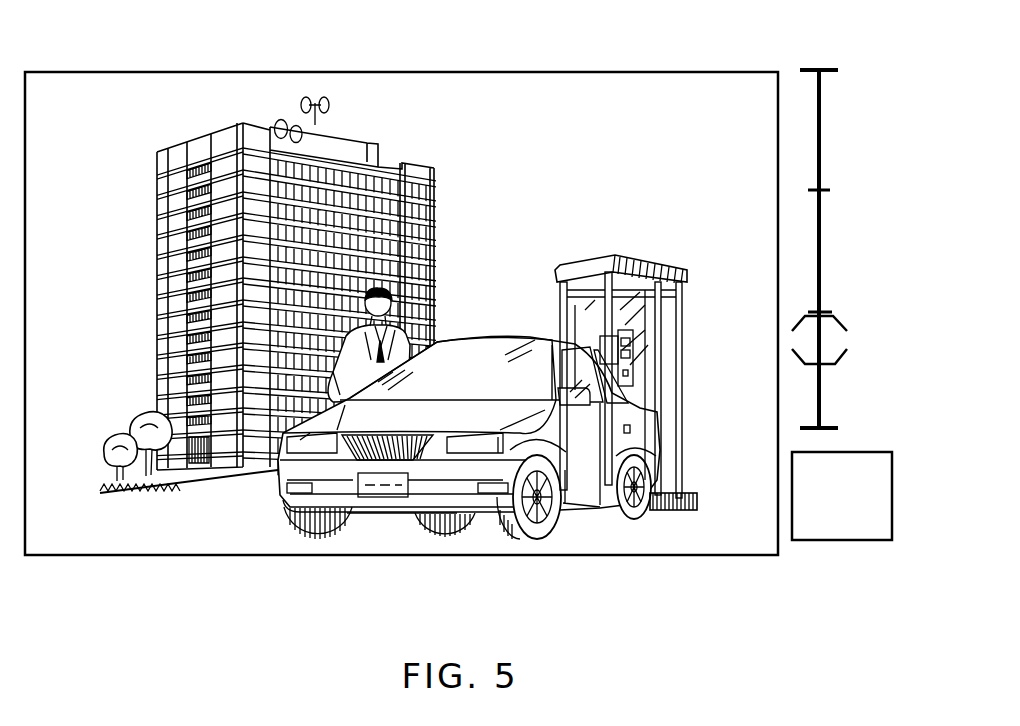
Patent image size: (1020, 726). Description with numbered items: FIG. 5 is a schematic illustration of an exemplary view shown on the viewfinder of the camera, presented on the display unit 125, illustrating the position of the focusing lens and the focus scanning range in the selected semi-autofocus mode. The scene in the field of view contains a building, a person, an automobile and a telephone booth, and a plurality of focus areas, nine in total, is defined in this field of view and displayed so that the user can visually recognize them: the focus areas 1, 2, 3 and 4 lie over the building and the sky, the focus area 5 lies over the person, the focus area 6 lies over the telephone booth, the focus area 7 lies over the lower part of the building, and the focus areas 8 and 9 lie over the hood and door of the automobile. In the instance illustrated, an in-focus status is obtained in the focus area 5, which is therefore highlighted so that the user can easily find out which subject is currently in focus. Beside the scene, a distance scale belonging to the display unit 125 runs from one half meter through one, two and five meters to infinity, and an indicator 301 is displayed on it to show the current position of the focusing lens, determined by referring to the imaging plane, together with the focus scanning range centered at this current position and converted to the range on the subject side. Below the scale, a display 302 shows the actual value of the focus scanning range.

The focus area 1 is at (200, 150).
The focus area 2 is at (397, 143).
The focus area 3 is at (566, 142).
The focus area 4 is at (157, 306).
The focus area 5 is at (425, 298).
The focus area 6 is at (540, 308).
The focus area 7 is at (229, 455).
The focus area 8 is at (418, 418).
The focus area 9 is at (580, 462).
The display unit 125 is at (833, 39).
The indicator 301 is at (845, 340).
The display 302 is at (842, 540).